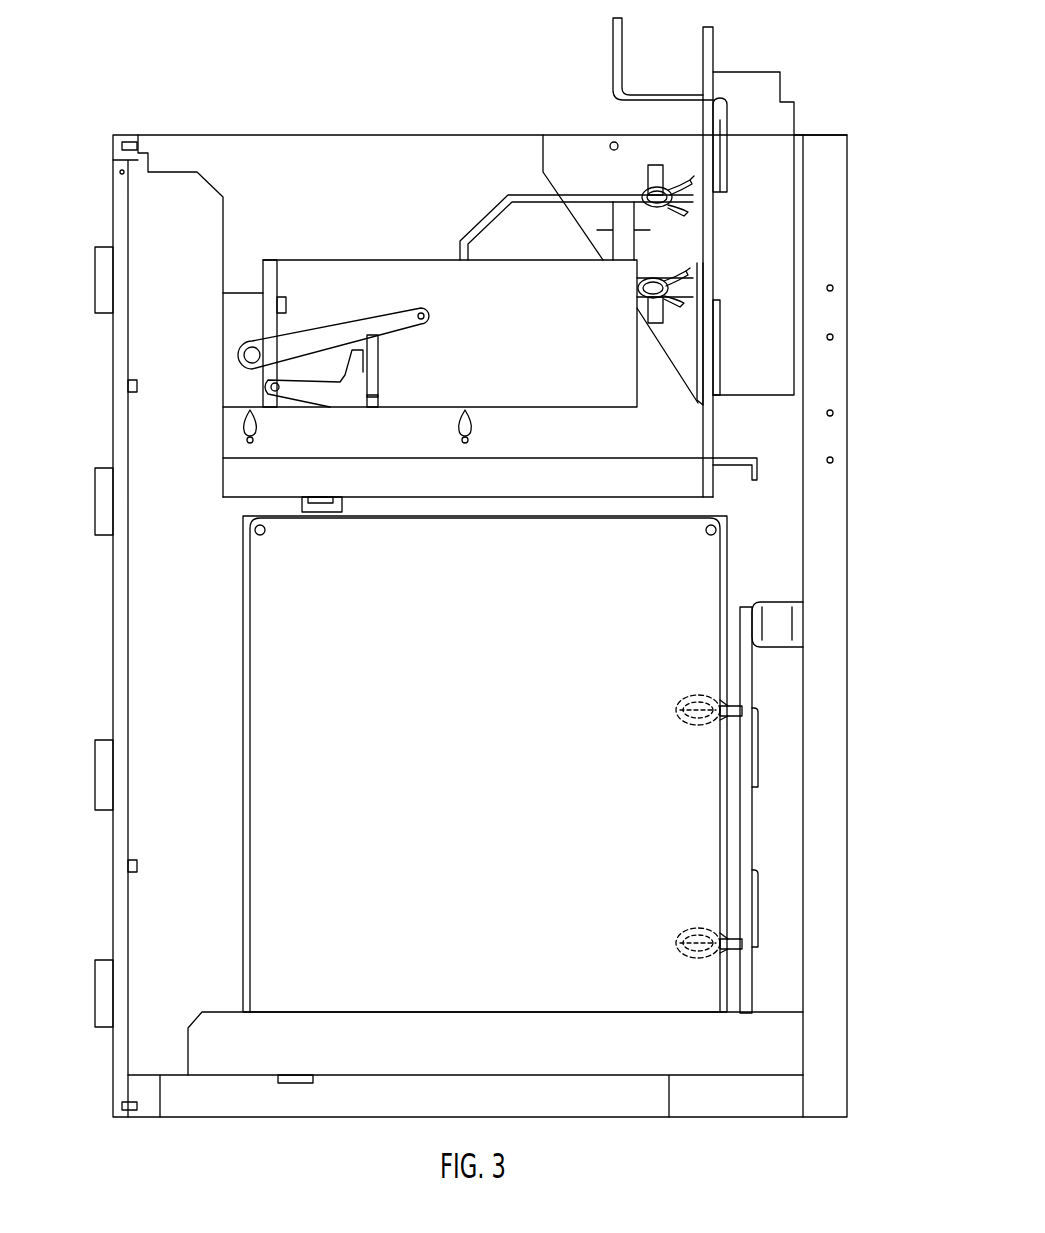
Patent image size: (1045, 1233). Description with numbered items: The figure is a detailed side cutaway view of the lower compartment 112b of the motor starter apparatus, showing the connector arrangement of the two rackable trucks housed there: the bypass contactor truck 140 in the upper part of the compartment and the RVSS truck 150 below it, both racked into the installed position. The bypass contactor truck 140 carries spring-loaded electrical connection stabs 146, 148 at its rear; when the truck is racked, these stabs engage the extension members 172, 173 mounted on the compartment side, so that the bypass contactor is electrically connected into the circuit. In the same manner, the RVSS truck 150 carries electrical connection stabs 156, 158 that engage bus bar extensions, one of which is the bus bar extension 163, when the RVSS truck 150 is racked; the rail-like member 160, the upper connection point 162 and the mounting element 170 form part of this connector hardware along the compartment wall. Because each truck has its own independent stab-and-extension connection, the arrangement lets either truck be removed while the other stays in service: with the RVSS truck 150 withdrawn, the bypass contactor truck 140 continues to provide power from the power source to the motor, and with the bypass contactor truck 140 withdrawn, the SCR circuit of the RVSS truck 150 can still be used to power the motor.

The lower compartment 112b is at (183, 997).
The bypass contactor truck 140 is at (232, 437).
The spring-loaded electrical connection stab 146 is at (668, 185).
The spring-loaded electrical connection stab 148 is at (650, 275).
The RVSS truck 150 is at (283, 813).
The electrical connection stab 156 is at (727, 717).
The electrical connection stab 158 is at (752, 955).
The rail 160 is at (753, 683).
The upper retaining clip 162 is at (727, 717).
The bus bar extension 163 is at (727, 948).
The mounting plate 170 is at (710, 245).
The extension member 172 is at (697, 212).
The extension member 173 is at (690, 305).